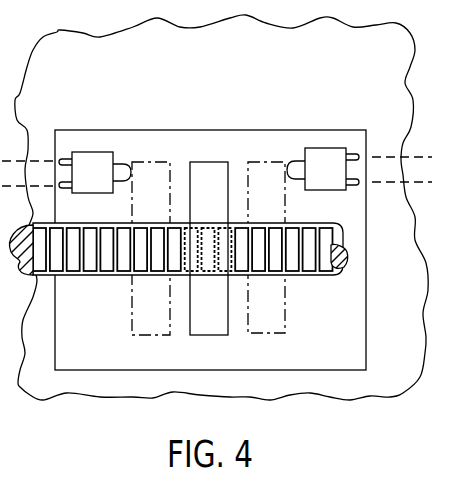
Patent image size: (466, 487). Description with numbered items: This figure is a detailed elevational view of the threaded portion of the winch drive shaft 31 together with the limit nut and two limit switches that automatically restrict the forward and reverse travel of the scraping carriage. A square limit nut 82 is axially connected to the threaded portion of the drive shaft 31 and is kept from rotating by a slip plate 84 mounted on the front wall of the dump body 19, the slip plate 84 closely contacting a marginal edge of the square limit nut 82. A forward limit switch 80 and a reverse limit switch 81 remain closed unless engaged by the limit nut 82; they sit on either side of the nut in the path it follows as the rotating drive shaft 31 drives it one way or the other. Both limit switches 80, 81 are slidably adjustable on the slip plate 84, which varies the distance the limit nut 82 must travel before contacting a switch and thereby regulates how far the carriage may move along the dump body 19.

The dump body 19 is at (391, 89).
The drive shaft 31 is at (345, 256).
The forward limit switch 80 is at (90, 163).
The reverse limit switch 81 is at (330, 158).
The square limit nut 82 is at (208, 170).
The slip plate 84 is at (257, 140).